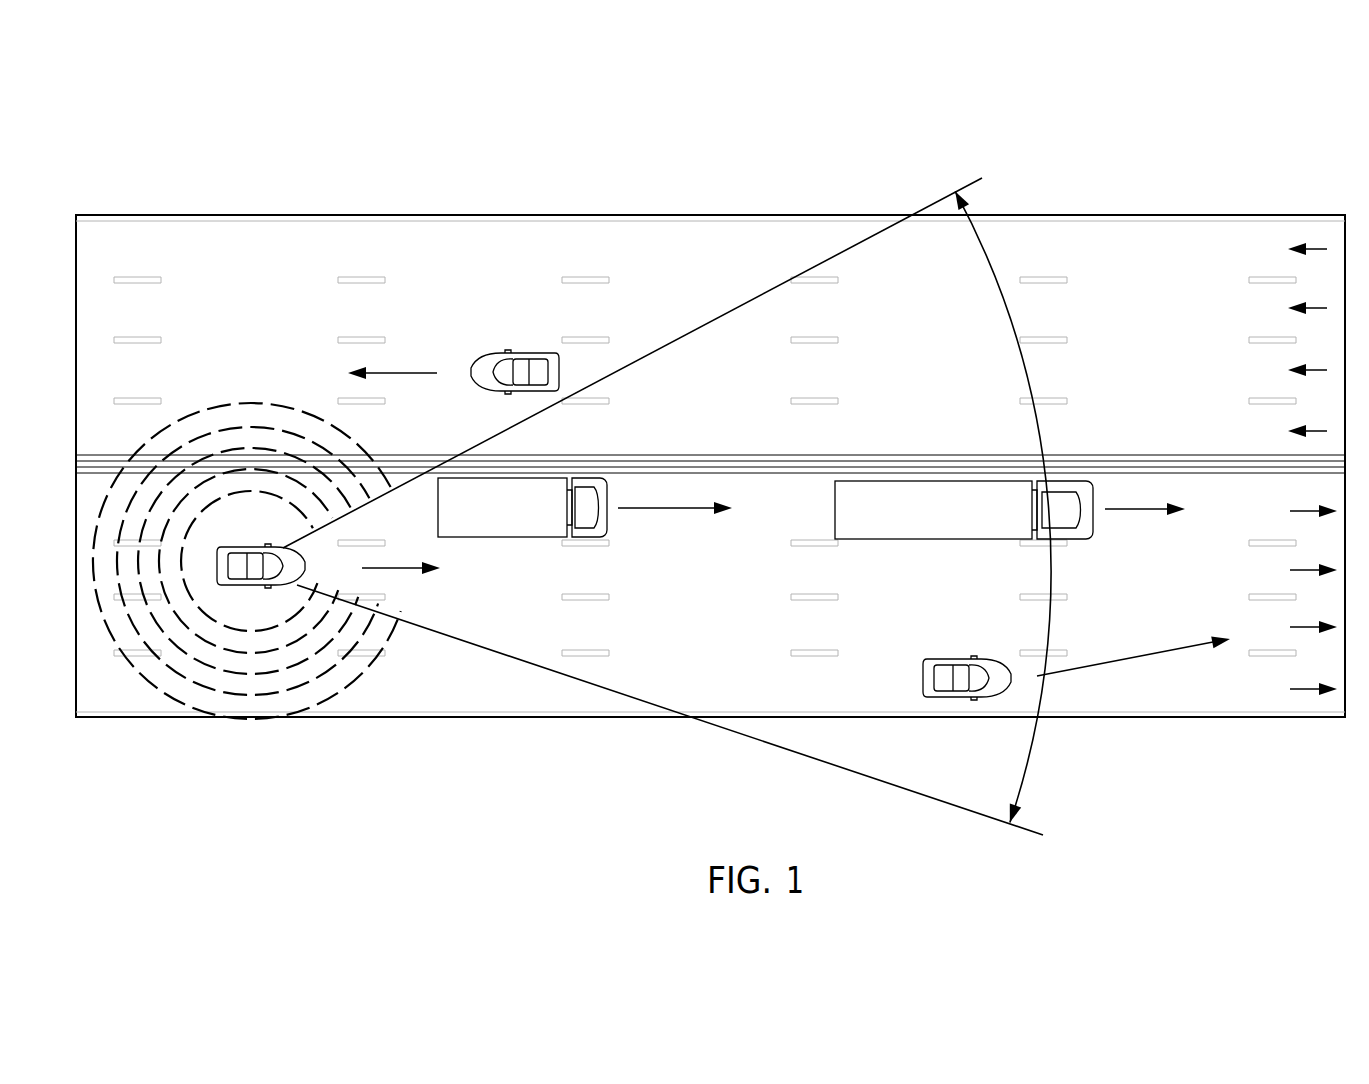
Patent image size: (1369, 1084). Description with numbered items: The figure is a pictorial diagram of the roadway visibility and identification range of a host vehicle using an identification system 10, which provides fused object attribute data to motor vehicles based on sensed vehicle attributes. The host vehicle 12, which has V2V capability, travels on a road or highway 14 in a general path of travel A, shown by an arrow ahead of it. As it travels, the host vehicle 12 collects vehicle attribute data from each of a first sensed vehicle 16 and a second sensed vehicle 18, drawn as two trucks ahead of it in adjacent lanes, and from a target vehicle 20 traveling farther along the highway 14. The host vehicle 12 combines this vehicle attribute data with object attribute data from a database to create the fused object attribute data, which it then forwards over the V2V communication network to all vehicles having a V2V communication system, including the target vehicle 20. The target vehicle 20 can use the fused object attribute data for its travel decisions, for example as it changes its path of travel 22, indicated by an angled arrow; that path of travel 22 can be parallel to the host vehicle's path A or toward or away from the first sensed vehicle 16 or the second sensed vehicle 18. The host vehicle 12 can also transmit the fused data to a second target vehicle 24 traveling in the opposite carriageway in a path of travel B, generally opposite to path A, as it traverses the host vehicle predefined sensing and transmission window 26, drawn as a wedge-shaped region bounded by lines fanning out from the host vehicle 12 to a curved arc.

The identification system 10 is at (1172, 138).
The host vehicle 12 is at (237, 569).
The highway 14 is at (475, 717).
The first sensed vehicle 16 is at (499, 537).
The second sensed vehicle 18 is at (903, 540).
The target vehicle 20 is at (962, 698).
The path of travel 22 is at (1143, 658).
The second target vehicle 24 is at (513, 352).
The host vehicle predefined sensing and transmission window 26 is at (892, 783).